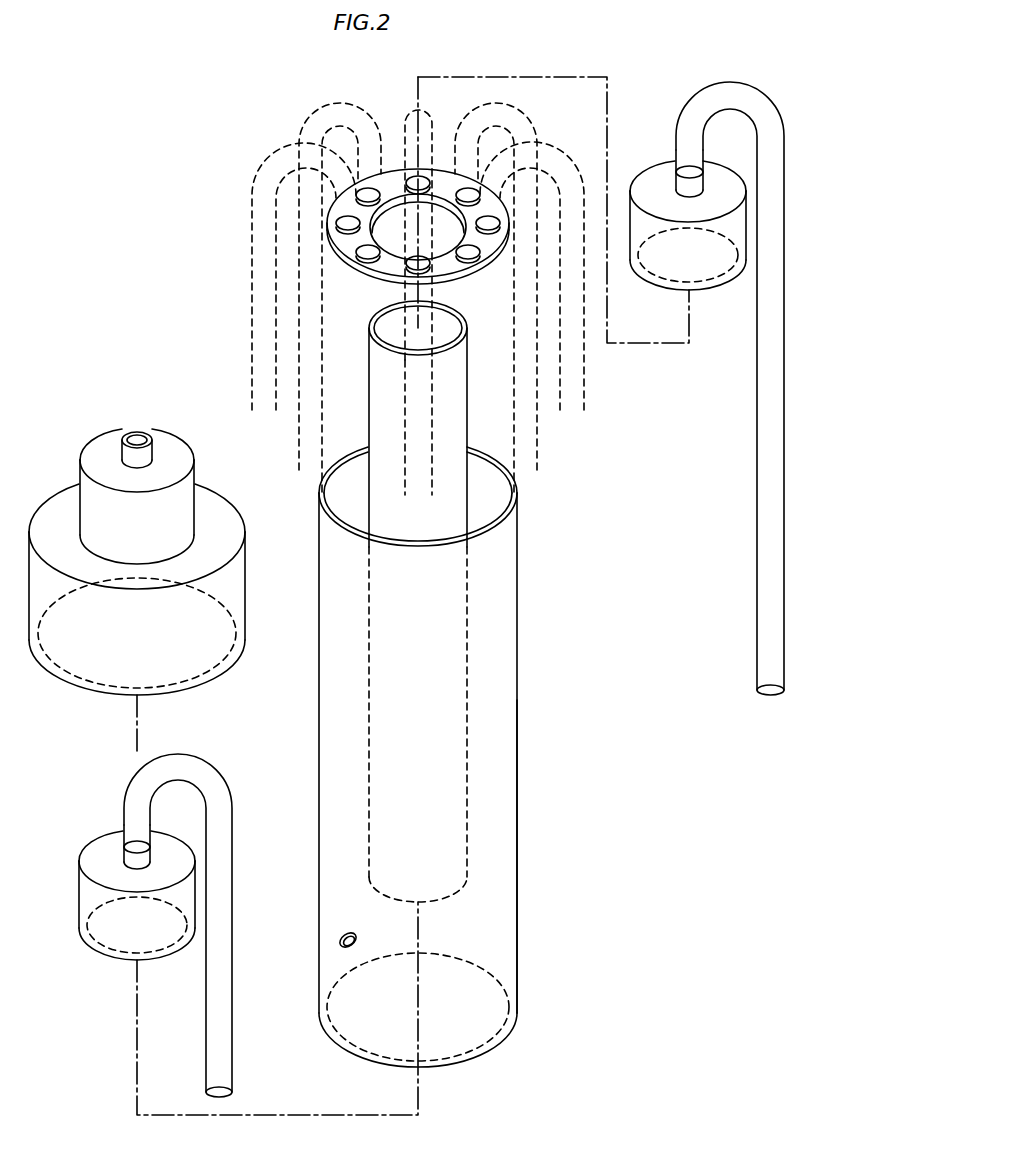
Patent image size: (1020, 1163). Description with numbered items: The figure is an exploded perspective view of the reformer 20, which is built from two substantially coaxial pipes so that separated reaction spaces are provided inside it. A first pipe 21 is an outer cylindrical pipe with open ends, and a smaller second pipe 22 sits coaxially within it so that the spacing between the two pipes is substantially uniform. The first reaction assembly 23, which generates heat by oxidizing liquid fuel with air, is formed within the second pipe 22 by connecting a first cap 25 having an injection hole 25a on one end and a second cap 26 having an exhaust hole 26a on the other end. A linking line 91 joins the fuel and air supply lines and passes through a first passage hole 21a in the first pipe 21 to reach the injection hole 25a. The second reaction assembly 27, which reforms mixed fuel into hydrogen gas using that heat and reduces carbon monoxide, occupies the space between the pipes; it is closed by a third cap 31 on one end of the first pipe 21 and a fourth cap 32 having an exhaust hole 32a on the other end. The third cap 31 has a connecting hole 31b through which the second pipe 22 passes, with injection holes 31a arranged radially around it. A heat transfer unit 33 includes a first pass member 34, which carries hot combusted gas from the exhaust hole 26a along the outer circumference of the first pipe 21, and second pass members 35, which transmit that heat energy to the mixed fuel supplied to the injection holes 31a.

The reformer 20 is at (736, 47).
The first pipe 21 is at (517, 908).
The first passage hole 21a is at (340, 940).
The second pipe 22 is at (467, 753).
The first reaction assembly 23 is at (478, 792).
The second reaction assembly 27 is at (528, 853).
The third cap 31 is at (340, 228).
The injection holes 31a is at (472, 258).
The connecting hole 31b is at (405, 205).
The heat transfer unit 33 is at (683, 572).
The first pass member 34 is at (768, 411).
The second pass members 35 is at (537, 416).
The second cap 26 is at (648, 180).
The exhaust hole 26a is at (677, 177).
The fourth cap 32 is at (232, 585).
The exhaust hole 32a is at (145, 457).
The first cap 25 is at (90, 902).
The injection hole 25a is at (127, 855).
The linking line 91 is at (225, 1040).